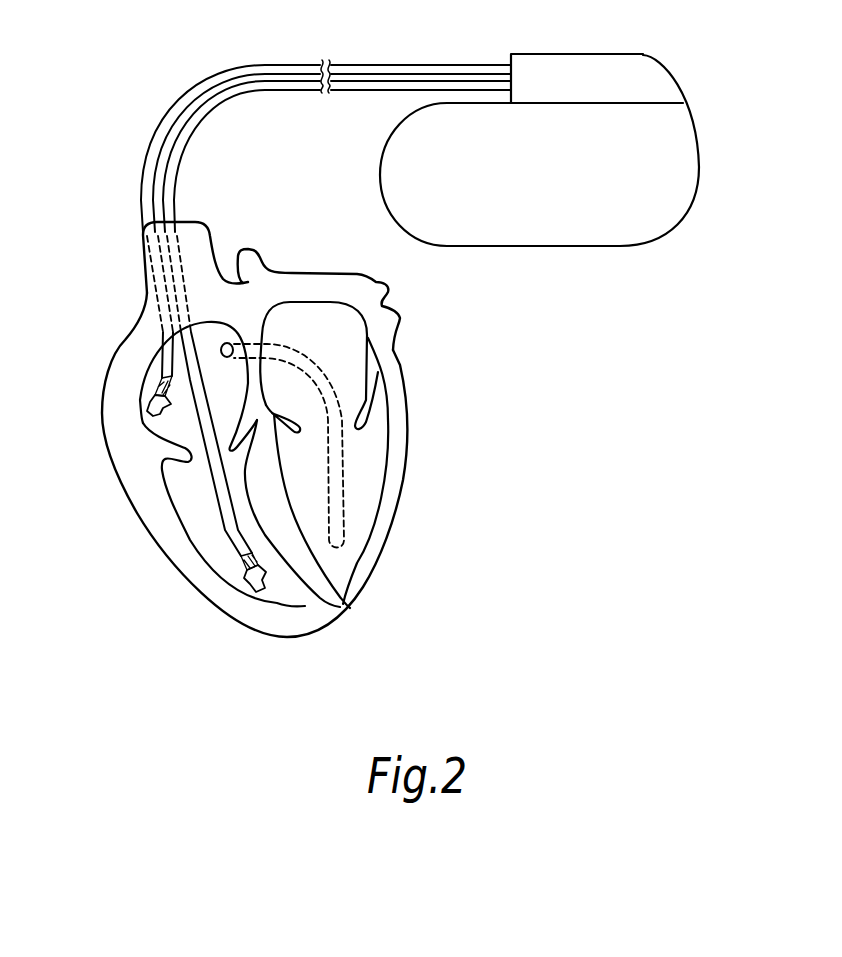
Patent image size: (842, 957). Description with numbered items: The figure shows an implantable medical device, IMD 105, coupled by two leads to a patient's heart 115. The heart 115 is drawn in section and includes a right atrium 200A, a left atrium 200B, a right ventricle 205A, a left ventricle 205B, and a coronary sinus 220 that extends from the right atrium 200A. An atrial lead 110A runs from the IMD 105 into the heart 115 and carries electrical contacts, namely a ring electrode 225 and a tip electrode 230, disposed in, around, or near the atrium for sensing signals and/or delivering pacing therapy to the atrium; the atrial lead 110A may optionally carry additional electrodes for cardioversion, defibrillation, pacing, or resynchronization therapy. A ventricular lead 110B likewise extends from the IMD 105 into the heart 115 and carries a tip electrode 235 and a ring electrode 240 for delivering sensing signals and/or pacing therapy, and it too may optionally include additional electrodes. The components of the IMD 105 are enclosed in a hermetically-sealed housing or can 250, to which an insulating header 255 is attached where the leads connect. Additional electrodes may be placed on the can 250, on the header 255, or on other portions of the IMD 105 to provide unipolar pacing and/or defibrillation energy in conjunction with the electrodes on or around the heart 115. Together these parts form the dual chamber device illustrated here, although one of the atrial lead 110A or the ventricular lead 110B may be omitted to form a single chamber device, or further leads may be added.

The IMD 105 is at (571, 132).
The atrial lead 110A is at (275, 243).
The ventricular lead 110B is at (311, 373).
The heart 115 is at (251, 430).
The right atrium 200A is at (158, 363).
The left atrium 200B is at (333, 330).
The right ventricle 205A is at (165, 481).
The left ventricle 205B is at (308, 513).
The coronary sinus 220 is at (228, 343).
The ring electrode 225 is at (158, 388).
The tip electrode 230 is at (150, 420).
The tip electrode 235 is at (263, 593).
The ring electrode 240 is at (240, 563).
The can 250 is at (699, 147).
The insulating header 255 is at (666, 63).